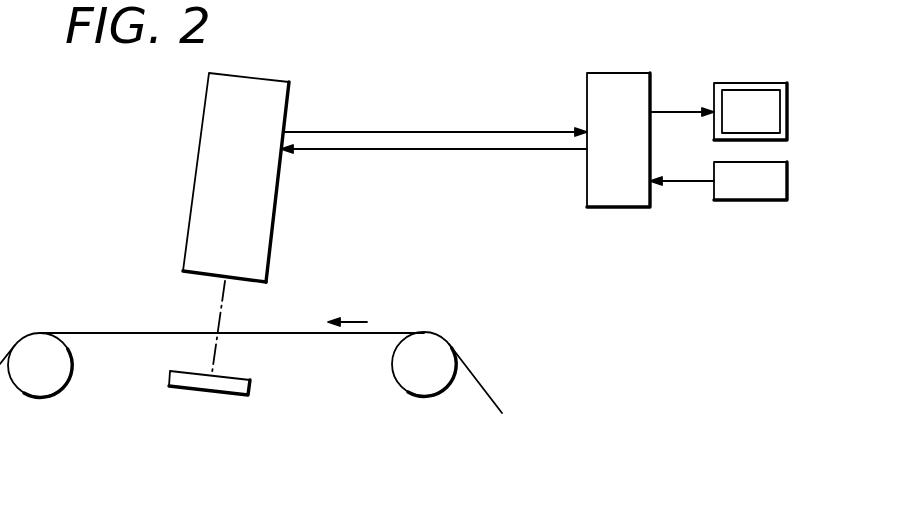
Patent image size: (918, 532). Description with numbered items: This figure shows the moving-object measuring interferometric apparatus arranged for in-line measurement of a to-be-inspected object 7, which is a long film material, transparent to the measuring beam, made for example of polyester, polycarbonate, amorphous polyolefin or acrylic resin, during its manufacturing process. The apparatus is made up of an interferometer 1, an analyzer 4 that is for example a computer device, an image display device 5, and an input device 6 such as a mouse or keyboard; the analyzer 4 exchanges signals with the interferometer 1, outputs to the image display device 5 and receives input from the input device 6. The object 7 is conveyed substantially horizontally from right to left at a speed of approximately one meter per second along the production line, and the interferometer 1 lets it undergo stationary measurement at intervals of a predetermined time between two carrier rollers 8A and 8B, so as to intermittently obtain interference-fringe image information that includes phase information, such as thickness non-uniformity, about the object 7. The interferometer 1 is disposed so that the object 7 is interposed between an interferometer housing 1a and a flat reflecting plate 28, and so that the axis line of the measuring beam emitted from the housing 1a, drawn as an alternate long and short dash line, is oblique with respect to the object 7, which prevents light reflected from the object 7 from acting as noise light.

The interferometer 1 is at (178, 168).
The interferometer housing 1a is at (290, 82).
The analyzer 4 is at (628, 73).
The image display device 5 is at (757, 83).
The input device 6 is at (757, 200).
The to-be-inspected object 7 is at (488, 388).
The carrier roller 8A is at (60, 375).
The carrier roller 8B is at (415, 380).
The flat reflecting plate 28 is at (238, 377).